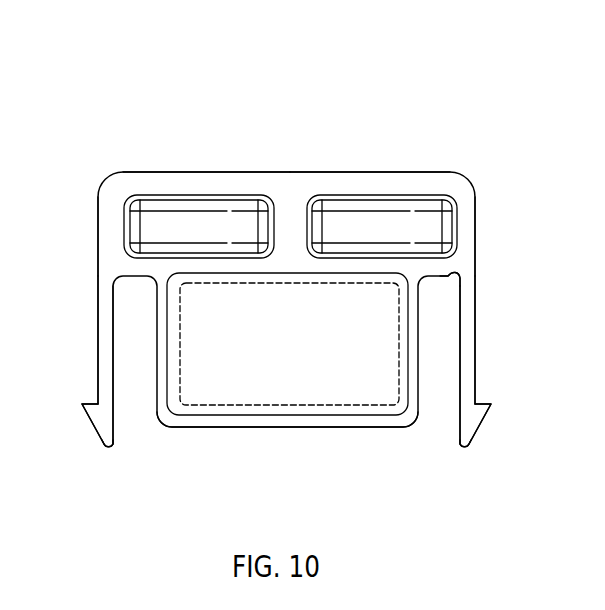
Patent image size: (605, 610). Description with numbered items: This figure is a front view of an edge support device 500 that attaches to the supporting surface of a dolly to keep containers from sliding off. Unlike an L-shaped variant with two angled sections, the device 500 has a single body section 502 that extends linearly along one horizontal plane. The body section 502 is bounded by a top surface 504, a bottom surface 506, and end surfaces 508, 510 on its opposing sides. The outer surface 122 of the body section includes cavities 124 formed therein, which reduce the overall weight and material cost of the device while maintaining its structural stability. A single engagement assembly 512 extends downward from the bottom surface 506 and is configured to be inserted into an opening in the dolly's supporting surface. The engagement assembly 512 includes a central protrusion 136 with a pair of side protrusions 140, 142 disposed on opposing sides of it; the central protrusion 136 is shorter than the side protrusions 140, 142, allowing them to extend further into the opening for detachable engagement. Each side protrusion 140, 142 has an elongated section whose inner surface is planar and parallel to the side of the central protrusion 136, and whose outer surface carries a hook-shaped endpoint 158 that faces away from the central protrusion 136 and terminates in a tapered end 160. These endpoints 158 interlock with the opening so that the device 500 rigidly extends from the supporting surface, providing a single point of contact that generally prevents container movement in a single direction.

The edge support device 500 is at (487, 80).
The outer surface 122 is at (432, 185).
The cavity 124 is at (163, 226).
The central protrusion 136 is at (325, 365).
The side protrusion 140 is at (99, 315).
The side protrusion 142 is at (475, 337).
The endpoint 158 is at (88, 423).
The tapered end 160 is at (102, 443).
The body section 502 is at (205, 172).
The top surface 504 is at (372, 172).
The bottom surface 506 is at (460, 283).
The end surface 508 is at (98, 212).
The end surface 510 is at (475, 207).
The engagement assembly 512 is at (288, 445).